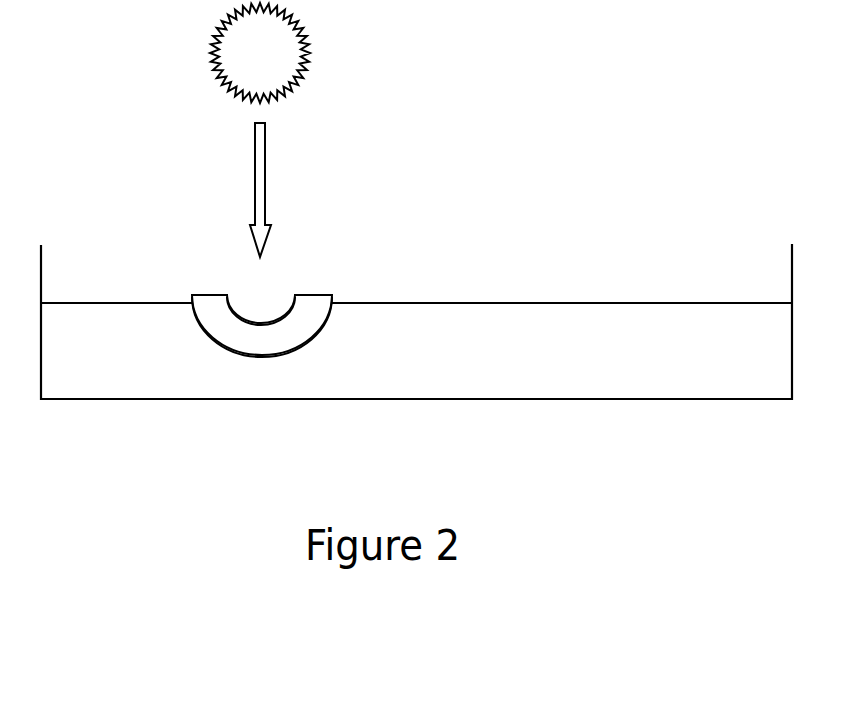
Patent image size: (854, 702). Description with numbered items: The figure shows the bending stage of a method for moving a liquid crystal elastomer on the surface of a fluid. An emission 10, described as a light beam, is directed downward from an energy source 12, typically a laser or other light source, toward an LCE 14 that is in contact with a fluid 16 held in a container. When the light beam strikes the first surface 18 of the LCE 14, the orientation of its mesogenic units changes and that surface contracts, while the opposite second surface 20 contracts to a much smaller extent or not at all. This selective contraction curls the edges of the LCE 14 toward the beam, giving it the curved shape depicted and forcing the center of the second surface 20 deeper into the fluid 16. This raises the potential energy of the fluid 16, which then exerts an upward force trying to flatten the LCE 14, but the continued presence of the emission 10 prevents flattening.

The emission 10 is at (265, 167).
The energy source 12 is at (310, 42).
The LCE 14 is at (227, 330).
The fluid 16 is at (637, 361).
The first surface 18 is at (260, 325).
The second surface 20 is at (295, 350).